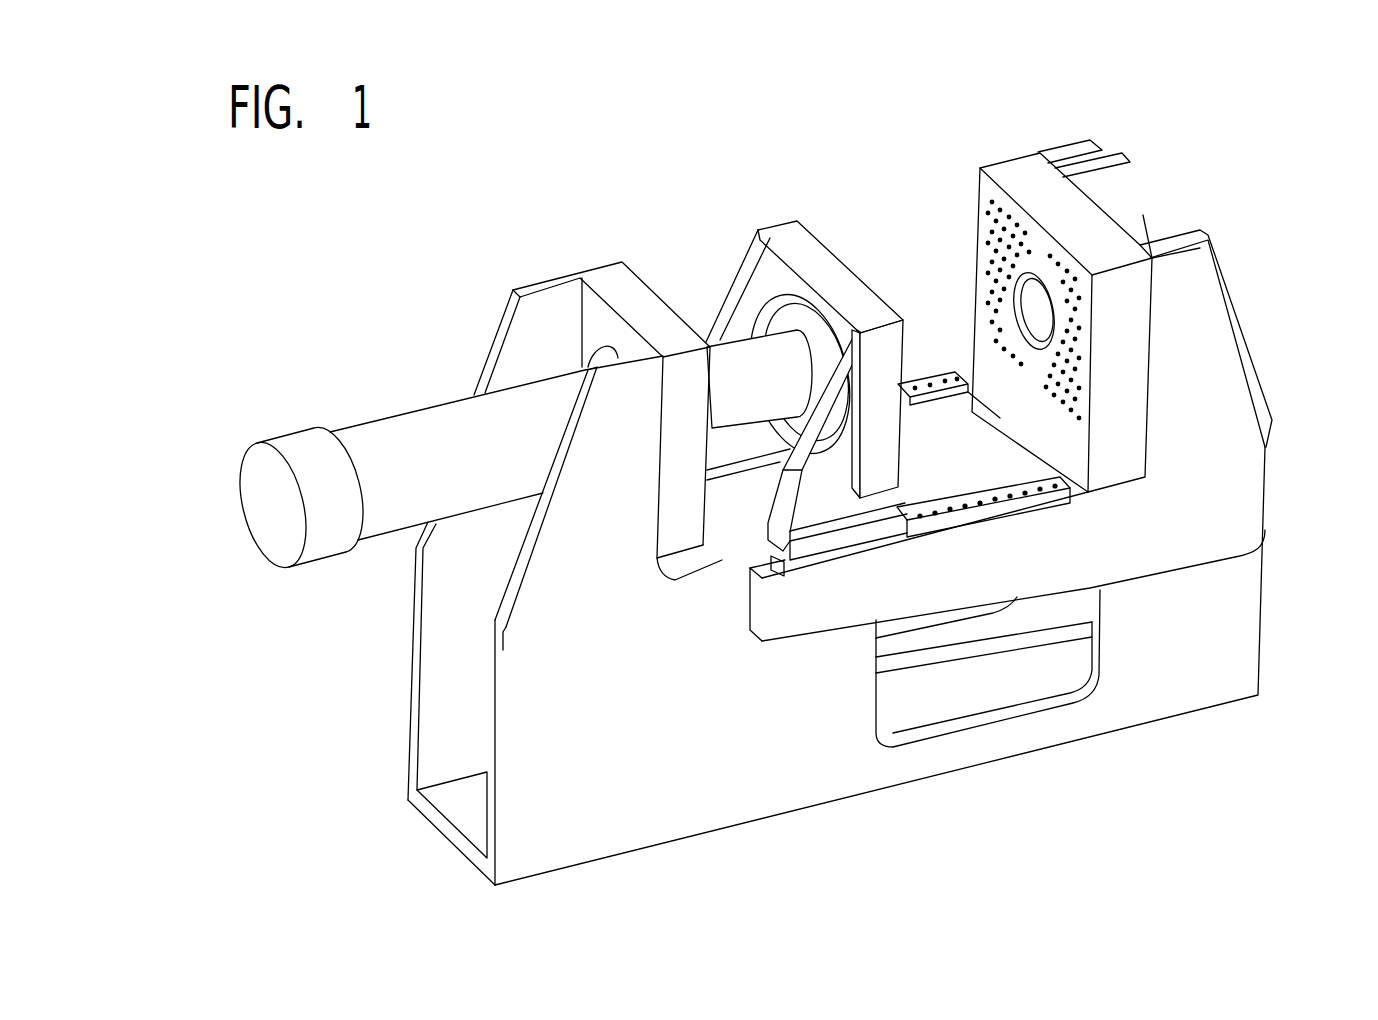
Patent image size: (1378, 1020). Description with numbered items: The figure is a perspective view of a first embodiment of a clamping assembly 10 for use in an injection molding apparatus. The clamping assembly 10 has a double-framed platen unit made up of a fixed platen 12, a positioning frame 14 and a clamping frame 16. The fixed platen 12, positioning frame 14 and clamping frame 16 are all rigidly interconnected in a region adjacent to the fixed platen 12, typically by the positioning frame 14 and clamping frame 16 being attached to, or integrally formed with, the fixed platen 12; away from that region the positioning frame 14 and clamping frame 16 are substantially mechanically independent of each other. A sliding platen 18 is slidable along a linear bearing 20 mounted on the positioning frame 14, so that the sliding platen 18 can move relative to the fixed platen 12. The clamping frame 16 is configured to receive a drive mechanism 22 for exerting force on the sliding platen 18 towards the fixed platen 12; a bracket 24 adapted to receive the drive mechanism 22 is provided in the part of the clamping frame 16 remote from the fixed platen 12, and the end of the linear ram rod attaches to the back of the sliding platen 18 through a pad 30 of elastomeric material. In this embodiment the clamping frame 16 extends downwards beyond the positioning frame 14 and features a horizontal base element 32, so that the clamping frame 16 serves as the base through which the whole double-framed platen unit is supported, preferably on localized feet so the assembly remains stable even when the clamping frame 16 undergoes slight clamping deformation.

The clamping assembly 10 is at (1268, 146).
The fixed platen 12 is at (1062, 212).
The positioning frame 14 is at (1207, 342).
The clamping frame 16 is at (1194, 232).
The sliding platen 18 is at (803, 253).
The linear bearing 20 is at (1000, 495).
The drive mechanism 22 is at (428, 460).
The bracket 24 is at (608, 330).
The pad 30 is at (819, 325).
The horizontal base element 32 is at (480, 802).